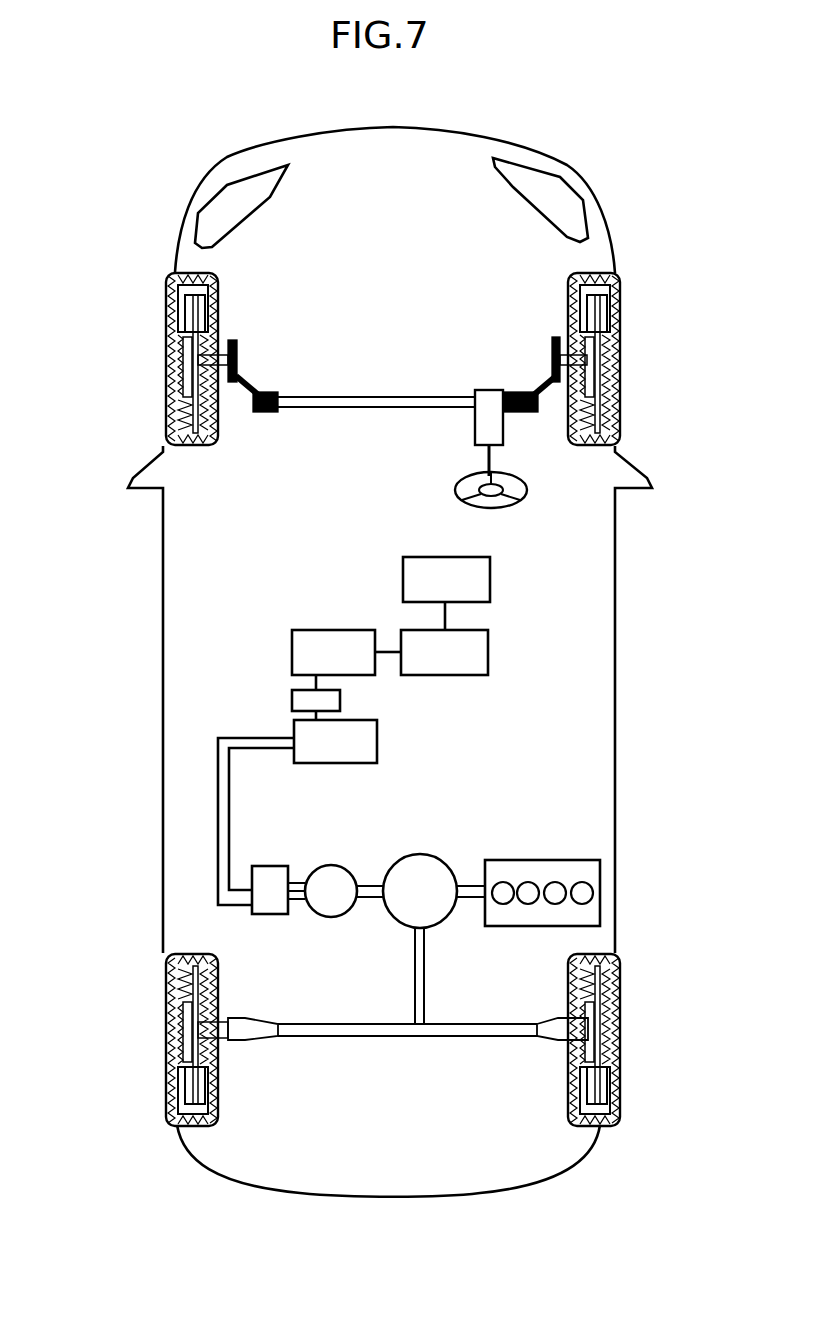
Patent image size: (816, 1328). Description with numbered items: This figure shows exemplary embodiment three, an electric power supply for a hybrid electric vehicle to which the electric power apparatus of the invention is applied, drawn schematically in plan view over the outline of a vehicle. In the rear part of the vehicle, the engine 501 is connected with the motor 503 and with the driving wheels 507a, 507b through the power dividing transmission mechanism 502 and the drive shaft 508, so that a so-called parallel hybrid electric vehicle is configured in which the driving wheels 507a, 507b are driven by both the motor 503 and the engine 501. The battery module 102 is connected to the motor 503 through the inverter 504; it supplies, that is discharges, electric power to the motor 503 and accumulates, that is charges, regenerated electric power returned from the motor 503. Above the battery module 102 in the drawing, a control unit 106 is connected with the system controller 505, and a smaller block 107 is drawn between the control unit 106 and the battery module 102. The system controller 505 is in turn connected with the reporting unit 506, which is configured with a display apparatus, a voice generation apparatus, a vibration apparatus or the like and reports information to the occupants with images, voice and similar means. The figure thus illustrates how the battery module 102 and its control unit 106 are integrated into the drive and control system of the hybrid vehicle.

The battery module 102 is at (377, 741).
The control unit 106 is at (292, 651).
The sensor 107 is at (292, 700).
The engine 501 is at (525, 860).
The power dividing transmission mechanism 502 is at (420, 854).
The motor 503 is at (333, 864).
The inverter 504 is at (270, 866).
The system controller 505 is at (488, 652).
The reporting unit 506 is at (405, 558).
The driving wheel 507a is at (622, 1000).
The driving wheel 507b is at (163, 1100).
The drive shaft 508 is at (372, 1038).